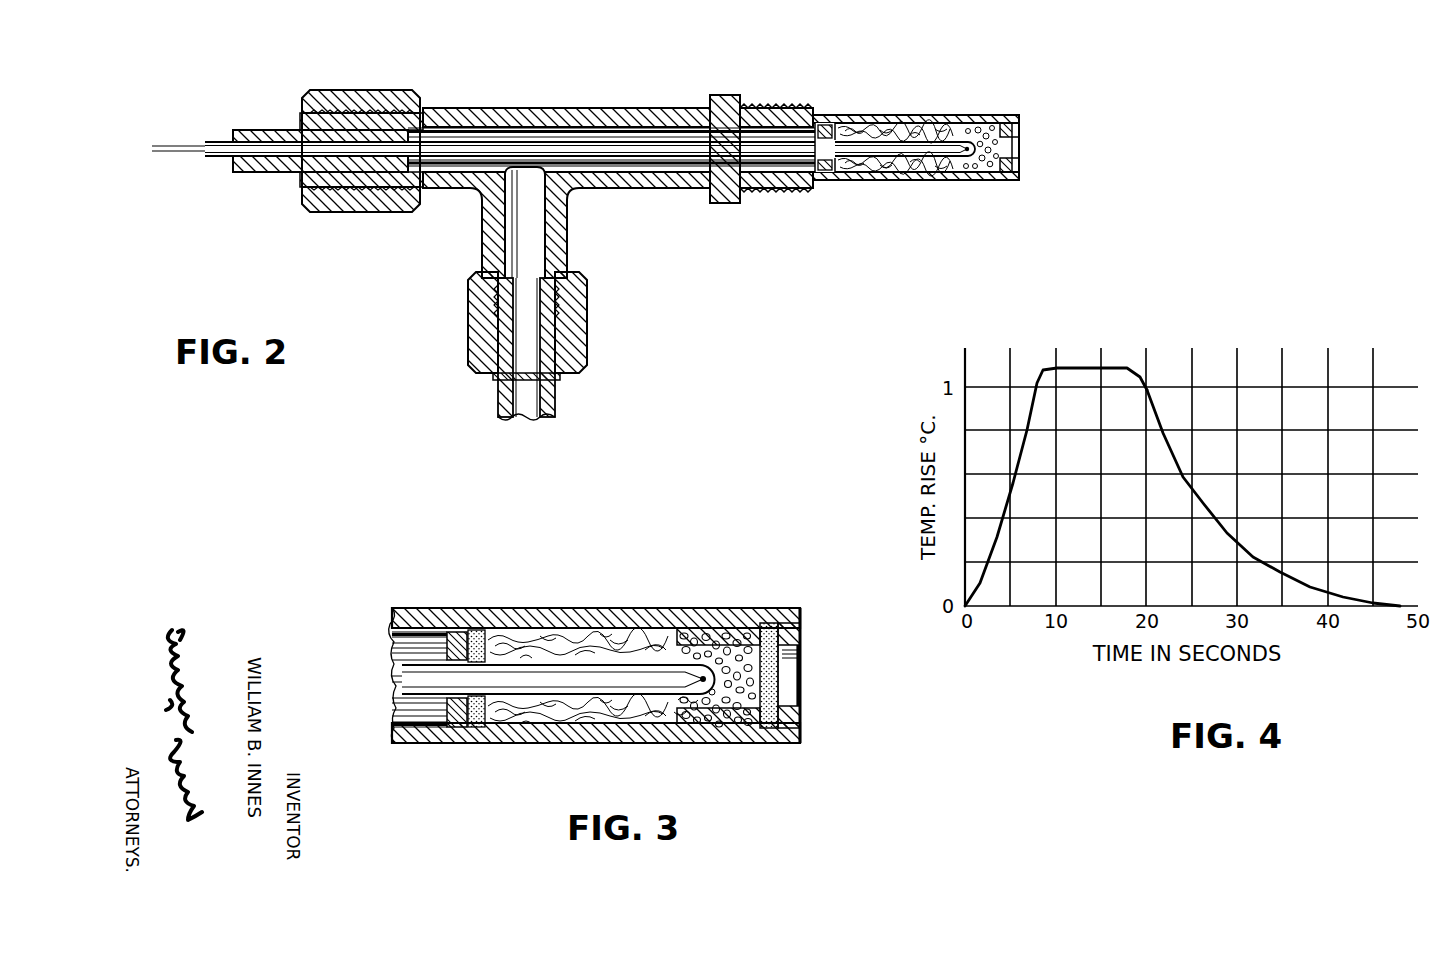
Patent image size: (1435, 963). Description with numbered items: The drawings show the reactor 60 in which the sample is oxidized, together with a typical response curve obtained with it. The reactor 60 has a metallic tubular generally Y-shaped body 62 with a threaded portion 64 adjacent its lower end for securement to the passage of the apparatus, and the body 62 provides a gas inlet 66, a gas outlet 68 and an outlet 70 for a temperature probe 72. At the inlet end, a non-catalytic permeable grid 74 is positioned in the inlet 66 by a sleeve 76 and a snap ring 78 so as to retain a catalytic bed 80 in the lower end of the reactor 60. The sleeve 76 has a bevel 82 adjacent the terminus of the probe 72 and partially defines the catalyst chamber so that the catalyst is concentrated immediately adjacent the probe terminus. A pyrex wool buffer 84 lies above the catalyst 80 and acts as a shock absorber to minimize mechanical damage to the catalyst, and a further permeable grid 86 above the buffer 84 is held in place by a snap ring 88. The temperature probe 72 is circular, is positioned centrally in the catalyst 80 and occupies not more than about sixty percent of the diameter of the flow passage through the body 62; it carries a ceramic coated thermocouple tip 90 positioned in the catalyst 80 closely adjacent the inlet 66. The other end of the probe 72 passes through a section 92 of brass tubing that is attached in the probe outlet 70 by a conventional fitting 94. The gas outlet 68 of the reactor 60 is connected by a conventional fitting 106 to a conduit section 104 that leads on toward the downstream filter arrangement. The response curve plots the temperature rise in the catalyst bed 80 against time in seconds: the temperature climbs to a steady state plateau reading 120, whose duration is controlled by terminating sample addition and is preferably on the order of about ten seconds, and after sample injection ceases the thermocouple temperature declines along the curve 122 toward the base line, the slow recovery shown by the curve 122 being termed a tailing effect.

In FIG. 2, the reactor 60 is at (592, 88).
In FIG. 3, the reactor 60 is at (584, 574).
In FIG. 2, the body 62 is at (650, 108).
In FIG. 2, the threaded portion 64 is at (760, 108).
In FIG. 3, the threaded portion 64 is at (594, 675).
In FIG. 2, the gas inlet 66 is at (1024, 147).
In FIG. 3, the gas inlet 66 is at (800, 681).
In FIG. 2, the gas outlet 68 is at (512, 214).
In FIG. 2, the outlet 70 is at (449, 128).
In FIG. 2, the temperature probe 72 is at (683, 140).
In FIG. 3, the temperature probe 72 is at (408, 660).
In FIG. 3, the non-catalytic permeable grid 74 is at (768, 625).
In FIG. 3, the sleeve 76 is at (741, 722).
In FIG. 3, the snap ring 78 is at (800, 631).
In FIG. 3, the catalytic bed 80 is at (713, 632).
In FIG. 3, the bevel 82 is at (706, 700).
In FIG. 3, the pyrex wool buffer 84 is at (622, 632).
In FIG. 3, the permeable grid 86 is at (477, 632).
In FIG. 3, the snap ring 88 is at (452, 632).
In FIG. 3, the thermocouple tip 90 is at (681, 705).
In FIG. 2, the section of brass tubing 92 is at (270, 136).
In FIG. 2, the fitting 94 is at (375, 100).
In FIG. 2, the conduit section 104 is at (505, 400).
In FIG. 2, the fitting 106 is at (472, 308).
In FIG. 4, the plateau reading 120 is at (1077, 367).
In FIG. 4, the curve 122 is at (1202, 500).